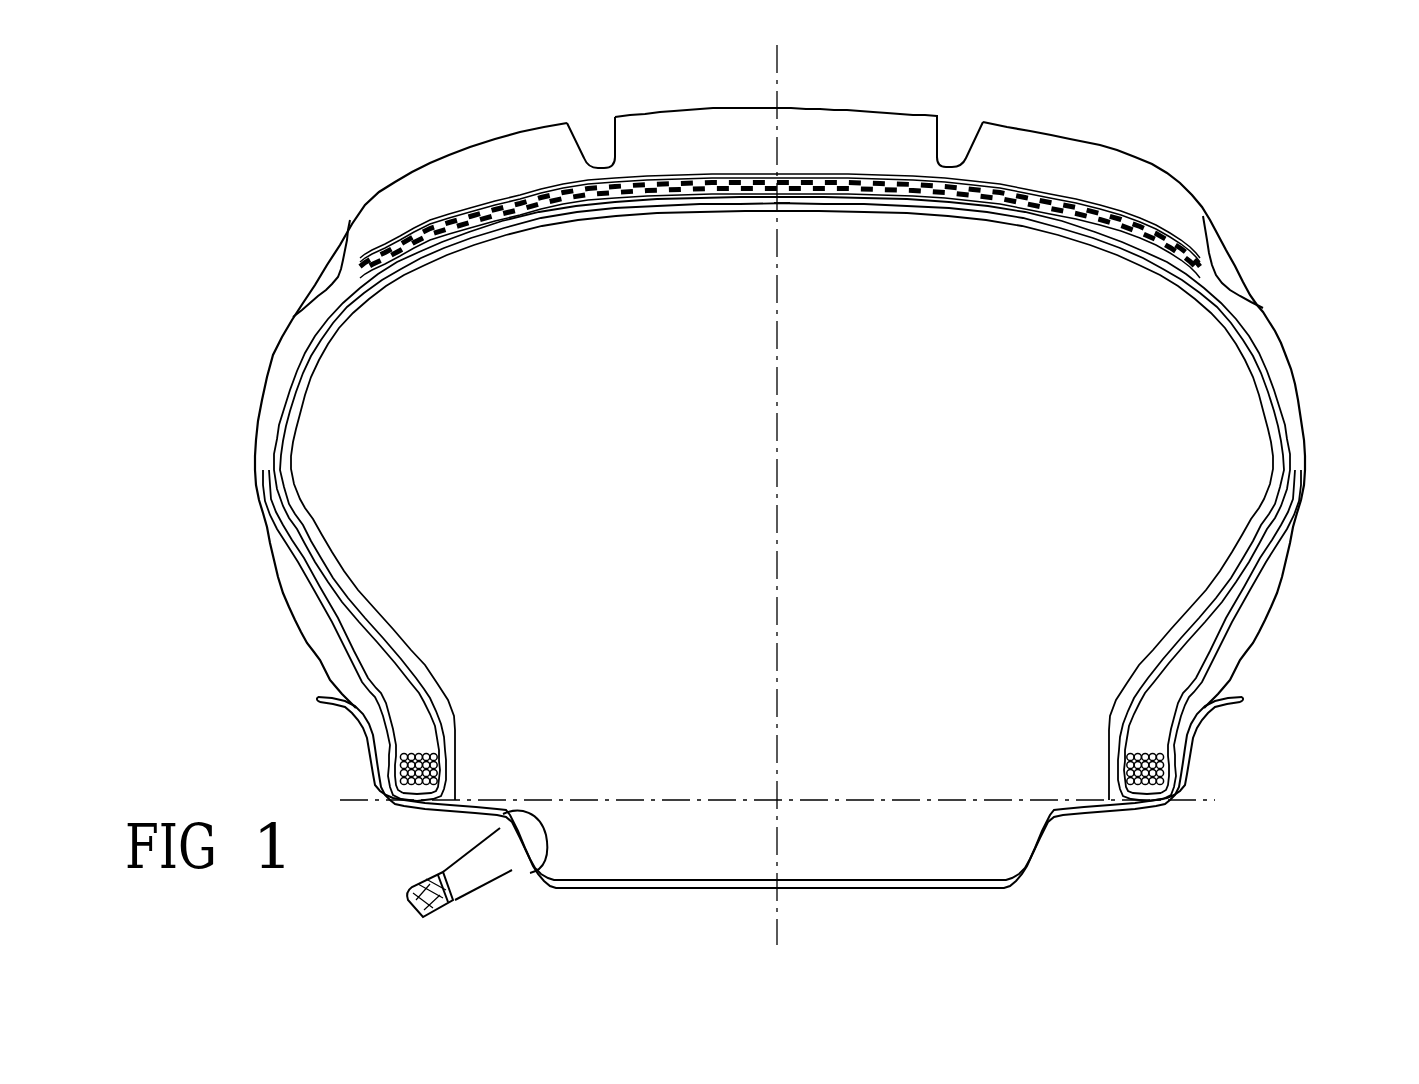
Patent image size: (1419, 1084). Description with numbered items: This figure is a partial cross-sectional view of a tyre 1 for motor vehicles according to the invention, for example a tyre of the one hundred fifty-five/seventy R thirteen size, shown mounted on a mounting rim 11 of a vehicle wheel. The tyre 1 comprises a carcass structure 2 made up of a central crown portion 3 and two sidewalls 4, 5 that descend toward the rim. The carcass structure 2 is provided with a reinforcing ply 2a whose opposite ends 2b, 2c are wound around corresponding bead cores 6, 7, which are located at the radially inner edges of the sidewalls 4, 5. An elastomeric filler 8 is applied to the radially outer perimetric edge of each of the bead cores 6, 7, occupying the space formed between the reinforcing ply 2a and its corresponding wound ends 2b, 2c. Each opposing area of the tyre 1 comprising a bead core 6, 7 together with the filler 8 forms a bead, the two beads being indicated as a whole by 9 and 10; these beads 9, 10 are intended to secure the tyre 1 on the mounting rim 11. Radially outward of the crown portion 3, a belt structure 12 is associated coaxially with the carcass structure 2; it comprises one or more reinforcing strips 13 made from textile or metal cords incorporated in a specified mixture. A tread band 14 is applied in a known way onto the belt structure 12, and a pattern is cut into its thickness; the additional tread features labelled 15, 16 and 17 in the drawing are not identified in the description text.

The tyre 1 is at (1184, 126).
The carcass structure 2 is at (983, 213).
The reinforcing ply 2a is at (305, 348).
The end of reinforcing ply 2b is at (337, 637).
The end of reinforcing ply 2c is at (1240, 605).
The central crown portion 3 is at (780, 90).
The sidewall 4 is at (1308, 432).
The sidewall 5 is at (248, 463).
The bead core 6 is at (422, 748).
The bead core 7 is at (1168, 750).
The elastomeric filler 8 is at (388, 664).
The bead 9 is at (470, 768).
The bead 10 is at (1080, 758).
The mounting rim 11 is at (1022, 850).
The belt structure 12 is at (673, 186).
The reinforcing strip 13 is at (447, 215).
The tread band 14 is at (883, 128).
The tread rib 15 is at (665, 143).
The tread groove 16 is at (593, 125).
The tread groove 17 is at (957, 128).